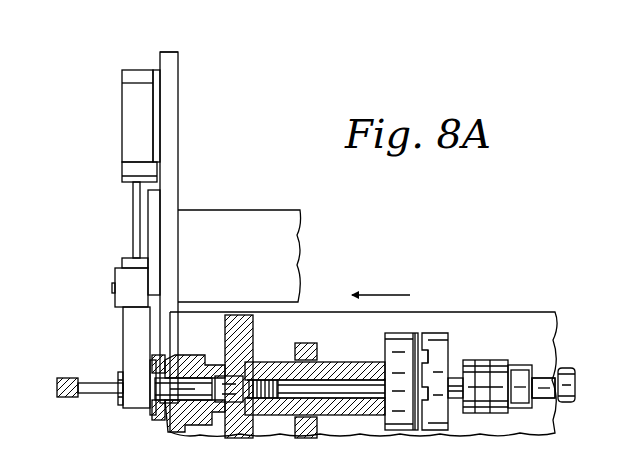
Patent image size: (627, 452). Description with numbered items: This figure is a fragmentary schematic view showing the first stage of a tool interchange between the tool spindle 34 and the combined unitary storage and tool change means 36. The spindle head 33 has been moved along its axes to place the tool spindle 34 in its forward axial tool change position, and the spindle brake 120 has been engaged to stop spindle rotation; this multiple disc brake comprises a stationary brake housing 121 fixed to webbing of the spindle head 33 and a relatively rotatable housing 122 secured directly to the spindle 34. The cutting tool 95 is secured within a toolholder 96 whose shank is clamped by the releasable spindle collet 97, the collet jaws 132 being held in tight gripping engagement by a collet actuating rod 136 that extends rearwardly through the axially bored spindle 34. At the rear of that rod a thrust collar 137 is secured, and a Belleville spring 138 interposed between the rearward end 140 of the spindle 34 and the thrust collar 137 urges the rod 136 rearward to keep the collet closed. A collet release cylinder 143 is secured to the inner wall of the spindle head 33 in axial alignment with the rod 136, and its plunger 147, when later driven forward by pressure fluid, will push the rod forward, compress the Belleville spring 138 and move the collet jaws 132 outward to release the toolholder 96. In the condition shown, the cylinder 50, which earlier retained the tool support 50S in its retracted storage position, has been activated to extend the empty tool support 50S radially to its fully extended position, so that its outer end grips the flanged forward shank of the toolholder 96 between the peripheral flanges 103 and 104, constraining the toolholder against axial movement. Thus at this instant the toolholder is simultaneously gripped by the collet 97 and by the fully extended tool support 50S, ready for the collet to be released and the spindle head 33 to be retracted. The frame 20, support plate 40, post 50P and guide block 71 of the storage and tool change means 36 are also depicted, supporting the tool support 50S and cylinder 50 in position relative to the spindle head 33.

The machine frame 20 is at (196, 220).
The spindle head 33 is at (338, 322).
The tool spindle 34 is at (287, 370).
The combined unitary storage and tool change means 36 is at (157, 53).
The support plate 40 is at (172, 136).
The cylinder 50 is at (145, 127).
The actuator post 50P is at (133, 196).
The tool support 50S is at (136, 330).
The guide block 71 is at (138, 296).
The cutting tool 95 is at (82, 366).
The toolholder 96 is at (180, 372).
The spindle collet 97 is at (152, 362).
The peripheral flange 103 is at (119, 406).
The peripheral flange 104 is at (154, 414).
The multiple disc spindle brake 120 is at (421, 330).
The stationary brake housing 121 is at (441, 356).
The rotatable housing 122 is at (398, 349).
The collet jaws 132 is at (187, 406).
The collet actuating rod 136 is at (323, 402).
The thrust collar 137 is at (515, 365).
The Belleville spring 138 is at (487, 357).
The rearward end of the spindle 140 is at (456, 396).
The collet release cylinder 143 is at (566, 369).
The plunger 147 is at (548, 396).